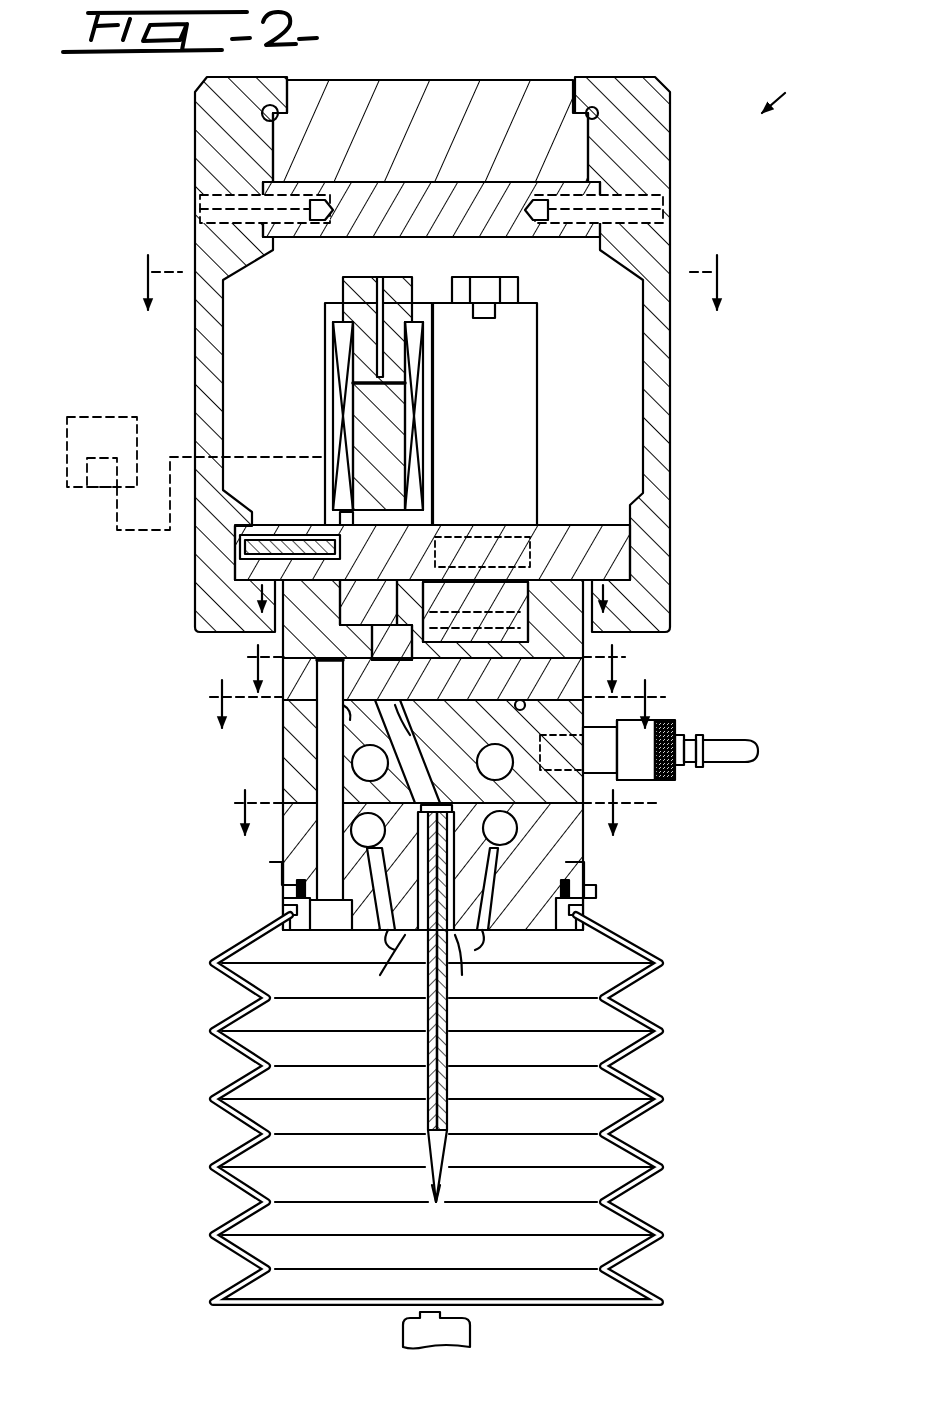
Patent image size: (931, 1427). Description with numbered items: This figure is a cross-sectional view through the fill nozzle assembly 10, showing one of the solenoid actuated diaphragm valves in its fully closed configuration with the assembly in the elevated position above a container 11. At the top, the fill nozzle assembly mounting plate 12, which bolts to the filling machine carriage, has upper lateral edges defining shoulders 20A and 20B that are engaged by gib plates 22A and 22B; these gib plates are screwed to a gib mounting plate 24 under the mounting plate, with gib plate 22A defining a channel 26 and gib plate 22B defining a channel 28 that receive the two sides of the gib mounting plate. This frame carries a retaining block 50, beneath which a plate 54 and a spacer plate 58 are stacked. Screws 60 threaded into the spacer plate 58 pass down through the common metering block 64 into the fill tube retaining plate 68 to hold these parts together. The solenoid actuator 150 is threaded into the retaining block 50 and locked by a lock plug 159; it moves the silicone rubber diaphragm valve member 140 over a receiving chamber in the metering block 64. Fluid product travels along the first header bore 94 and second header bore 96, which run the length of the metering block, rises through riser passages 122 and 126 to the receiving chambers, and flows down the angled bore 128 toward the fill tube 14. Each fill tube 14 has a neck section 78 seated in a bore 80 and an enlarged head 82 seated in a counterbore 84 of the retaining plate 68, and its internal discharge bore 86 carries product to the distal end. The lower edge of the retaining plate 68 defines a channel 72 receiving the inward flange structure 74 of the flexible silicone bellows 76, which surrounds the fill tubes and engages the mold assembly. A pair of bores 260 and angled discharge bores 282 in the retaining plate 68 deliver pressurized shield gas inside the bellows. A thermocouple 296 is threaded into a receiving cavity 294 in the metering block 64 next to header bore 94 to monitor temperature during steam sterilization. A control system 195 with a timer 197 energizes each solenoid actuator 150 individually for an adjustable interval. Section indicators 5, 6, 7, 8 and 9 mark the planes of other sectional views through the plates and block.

The fill nozzle assembly 10 is at (789, 92).
The container 11 is at (474, 1334).
The fill nozzle assembly mounting plate 12 is at (487, 96).
The fill tube 14 is at (450, 1116).
The shoulder 20A is at (268, 121).
The shoulder 20B is at (586, 120).
The gib plate 22A is at (207, 378).
The gib plate 22B is at (660, 378).
The gib mounting plate 24 is at (393, 237).
The channel 26 is at (268, 200).
The channel 28 is at (610, 186).
The retaining block 50 is at (562, 540).
The plate 54 is at (590, 632).
The spacer plate 58 is at (585, 690).
The screw 60 is at (300, 748).
The metering block 64 is at (300, 760).
The fill tube retaining plate 68 is at (300, 830).
The channel 72 is at (288, 900).
The flange structure 74 is at (283, 906).
The bellows 76 is at (230, 1016).
The neck section 78 is at (470, 966).
The bore 80 is at (390, 965).
The head 82 is at (420, 933).
The counterbore 84 is at (475, 933).
The discharge bore 86 is at (437, 1203).
The first header bore 94 is at (533, 805).
The second header bore 96 is at (352, 757).
The riser passage 122 is at (332, 722).
The riser passage 126 is at (540, 733).
The angled bore 128 is at (388, 760).
The valve member 140 is at (393, 700).
The solenoid actuator 150 is at (420, 296).
The lock plug 159 is at (305, 525).
The control system 195 is at (97, 417).
The timer 197 is at (100, 478).
The bore 260 is at (355, 818).
The discharge bore 282 is at (387, 935).
The threaded receiving cavity 294 is at (600, 781).
The thermocouple 296 is at (672, 722).
The section line 5 is at (430, 281).
The section line 6 is at (431, 598).
The section line 7 is at (431, 668).
The section line 8 is at (428, 704).
The section line 9 is at (438, 812).